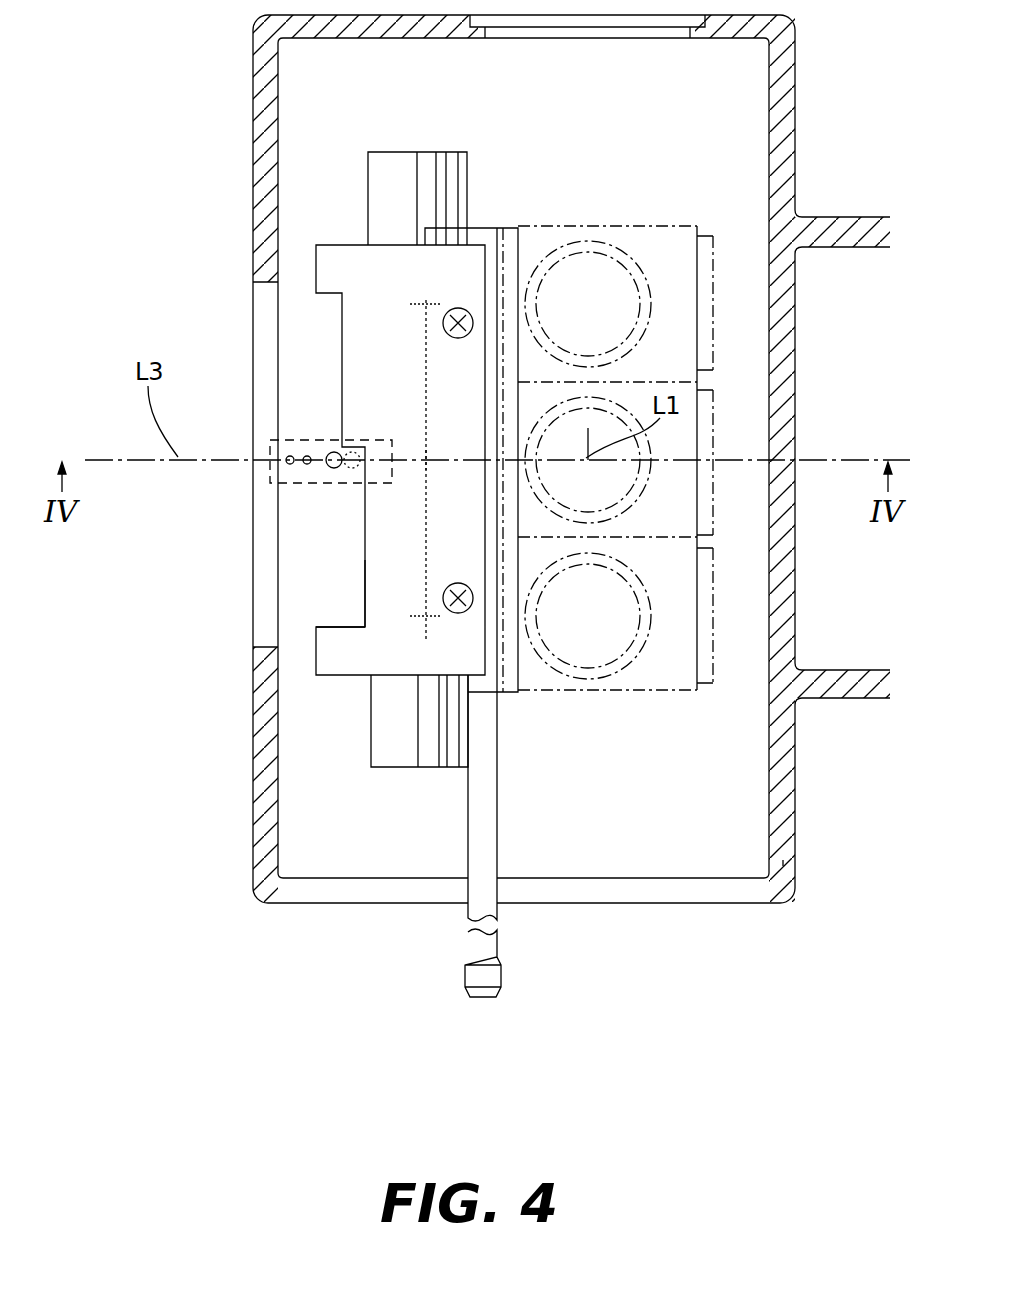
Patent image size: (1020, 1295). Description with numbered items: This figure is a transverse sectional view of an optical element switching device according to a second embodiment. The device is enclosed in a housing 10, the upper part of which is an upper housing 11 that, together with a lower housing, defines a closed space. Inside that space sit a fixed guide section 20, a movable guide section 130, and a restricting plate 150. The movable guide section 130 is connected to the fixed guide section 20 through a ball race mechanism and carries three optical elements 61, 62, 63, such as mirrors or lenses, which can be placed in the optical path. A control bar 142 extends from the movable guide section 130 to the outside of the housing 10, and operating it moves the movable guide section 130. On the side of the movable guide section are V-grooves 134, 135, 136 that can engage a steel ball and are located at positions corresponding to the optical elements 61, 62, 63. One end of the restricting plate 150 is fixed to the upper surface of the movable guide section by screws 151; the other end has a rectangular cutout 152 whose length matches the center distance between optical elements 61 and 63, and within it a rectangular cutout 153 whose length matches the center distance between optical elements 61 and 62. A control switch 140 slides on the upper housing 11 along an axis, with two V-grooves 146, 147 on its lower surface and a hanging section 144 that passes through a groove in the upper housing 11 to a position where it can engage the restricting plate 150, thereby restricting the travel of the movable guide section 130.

The housing 10 is at (800, 133).
The upper housing 11 is at (790, 852).
The fixed guide section 20 is at (400, 752).
The optical element 61 is at (688, 655).
The optical element 62 is at (685, 508).
The optical element 63 is at (688, 330).
The movable guide section 130 is at (497, 625).
The V-groove 134 is at (484, 690).
The V-groove 135 is at (440, 458).
The V-groove 136 is at (430, 302).
The control switch 140 is at (302, 440).
The control bar 142 is at (478, 978).
The hanging section 144 is at (344, 470).
The V-groove 146 is at (288, 466).
The V-groove 147 is at (307, 468).
The restricting plate 150 is at (338, 672).
The screw 151 is at (443, 328).
The rectangular cutout 152 is at (340, 308).
The rectangular cutout 153 is at (360, 582).